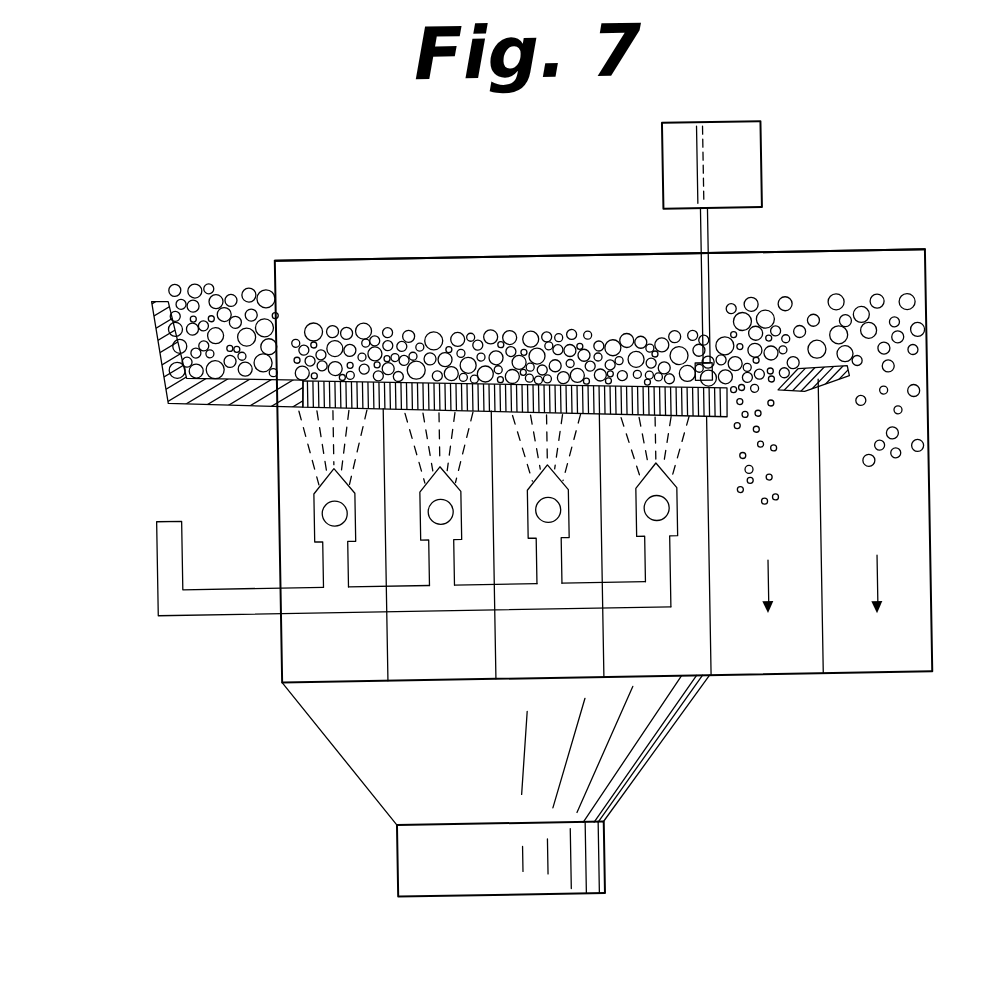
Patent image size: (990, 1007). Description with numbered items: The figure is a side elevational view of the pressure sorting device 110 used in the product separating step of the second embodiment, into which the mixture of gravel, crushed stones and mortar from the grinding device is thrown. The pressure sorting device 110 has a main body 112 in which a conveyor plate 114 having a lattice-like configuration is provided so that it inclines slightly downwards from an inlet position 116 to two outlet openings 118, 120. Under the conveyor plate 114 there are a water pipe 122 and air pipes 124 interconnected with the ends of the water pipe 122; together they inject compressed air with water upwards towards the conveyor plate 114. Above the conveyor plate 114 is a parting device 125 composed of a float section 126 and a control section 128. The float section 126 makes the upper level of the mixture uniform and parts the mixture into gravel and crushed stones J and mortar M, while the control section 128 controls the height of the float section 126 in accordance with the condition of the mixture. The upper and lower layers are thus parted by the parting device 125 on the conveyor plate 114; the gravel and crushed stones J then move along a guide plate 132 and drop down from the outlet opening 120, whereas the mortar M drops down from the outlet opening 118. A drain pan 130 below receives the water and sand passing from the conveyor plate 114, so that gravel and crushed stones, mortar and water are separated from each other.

The pressure sorting device 110 is at (866, 251).
The main body 112 is at (480, 253).
The conveyor plate 114 is at (249, 404).
The inlet position 116 is at (258, 273).
The outlet opening 118 is at (773, 659).
The outlet opening 120 is at (878, 660).
The water pipe 122 is at (169, 600).
The air pipes 124 is at (427, 512).
The parting device 125 is at (696, 237).
The float section 126 is at (719, 359).
The control section 128 is at (694, 134).
The drain pan 130 is at (403, 859).
The guide plate 132 is at (827, 371).